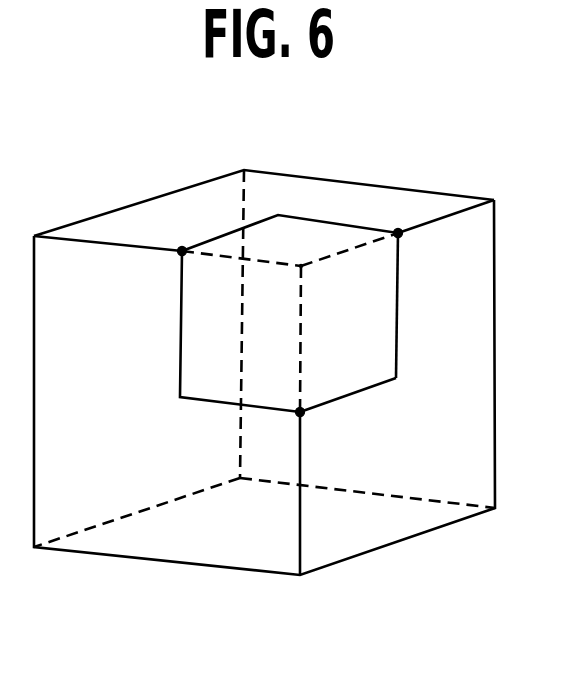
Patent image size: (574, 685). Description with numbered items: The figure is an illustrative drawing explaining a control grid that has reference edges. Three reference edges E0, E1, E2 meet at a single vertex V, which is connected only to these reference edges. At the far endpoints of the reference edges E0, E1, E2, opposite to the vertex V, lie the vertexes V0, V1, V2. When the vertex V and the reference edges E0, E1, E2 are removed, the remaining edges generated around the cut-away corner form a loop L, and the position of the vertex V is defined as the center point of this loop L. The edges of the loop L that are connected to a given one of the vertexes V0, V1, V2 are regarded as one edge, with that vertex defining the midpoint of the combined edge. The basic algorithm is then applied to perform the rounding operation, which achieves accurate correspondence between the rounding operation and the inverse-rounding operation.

The vertex V is at (299, 251).
The vertex V0 is at (415, 246).
The vertex V1 is at (316, 425).
The vertex V2 is at (185, 235).
The reference edge E0 is at (341, 253).
The reference edge E1 is at (317, 339).
The reference edge E2 is at (220, 258).
The loop L is at (348, 380).